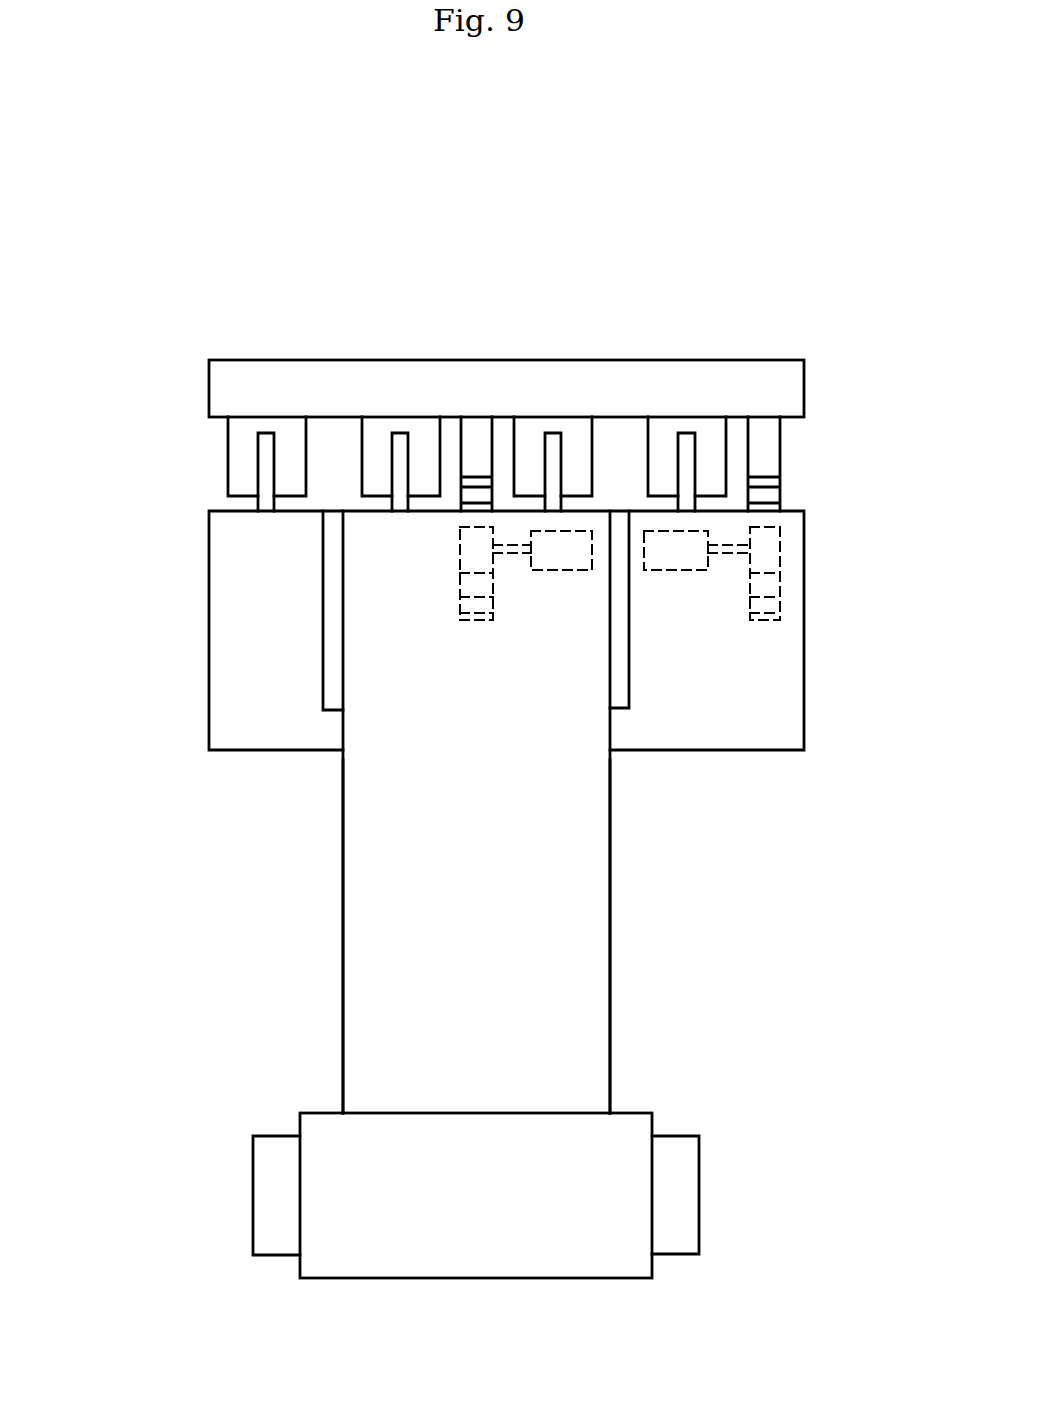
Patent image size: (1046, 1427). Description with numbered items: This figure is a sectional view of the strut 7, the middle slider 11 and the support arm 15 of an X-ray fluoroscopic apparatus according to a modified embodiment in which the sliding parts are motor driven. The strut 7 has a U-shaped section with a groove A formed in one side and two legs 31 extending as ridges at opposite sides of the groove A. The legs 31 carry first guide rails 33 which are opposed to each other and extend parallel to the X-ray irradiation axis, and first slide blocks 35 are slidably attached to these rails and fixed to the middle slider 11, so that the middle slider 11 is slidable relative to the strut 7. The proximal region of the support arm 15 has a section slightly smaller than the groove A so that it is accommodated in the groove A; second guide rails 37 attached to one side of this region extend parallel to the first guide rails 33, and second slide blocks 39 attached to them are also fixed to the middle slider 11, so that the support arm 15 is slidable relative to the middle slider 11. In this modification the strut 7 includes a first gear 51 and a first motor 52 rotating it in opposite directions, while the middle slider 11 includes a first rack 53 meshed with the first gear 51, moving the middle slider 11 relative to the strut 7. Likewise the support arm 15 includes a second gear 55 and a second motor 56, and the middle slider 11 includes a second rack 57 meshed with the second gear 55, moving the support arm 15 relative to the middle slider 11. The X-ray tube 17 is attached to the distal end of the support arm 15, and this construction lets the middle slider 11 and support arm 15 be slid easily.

The strut 7 is at (459, 812).
The middle slider 11 is at (804, 388).
The support arm 15 is at (611, 1017).
The X-ray tube 17 is at (700, 1193).
The legs 31 is at (653, 625).
The first guide rails 33 is at (410, 503).
The first slide blocks 35 is at (362, 457).
The second guide rails 37 is at (276, 503).
The second slide blocks 39 is at (227, 457).
The first gear 51 is at (762, 622).
The first motor 52 is at (665, 572).
The first rack 53 is at (780, 458).
The second gear 55 is at (477, 622).
The second motor 56 is at (552, 572).
The second rack 57 is at (492, 447).
The groove A is at (332, 712).